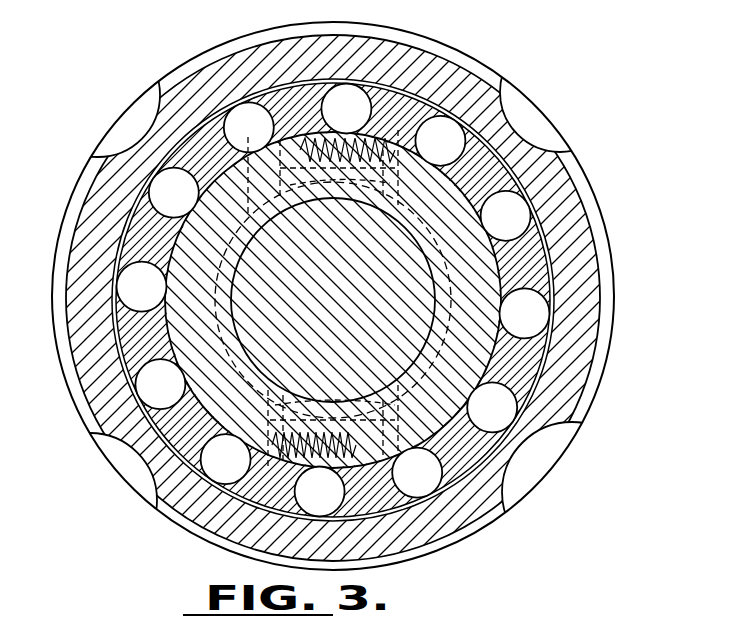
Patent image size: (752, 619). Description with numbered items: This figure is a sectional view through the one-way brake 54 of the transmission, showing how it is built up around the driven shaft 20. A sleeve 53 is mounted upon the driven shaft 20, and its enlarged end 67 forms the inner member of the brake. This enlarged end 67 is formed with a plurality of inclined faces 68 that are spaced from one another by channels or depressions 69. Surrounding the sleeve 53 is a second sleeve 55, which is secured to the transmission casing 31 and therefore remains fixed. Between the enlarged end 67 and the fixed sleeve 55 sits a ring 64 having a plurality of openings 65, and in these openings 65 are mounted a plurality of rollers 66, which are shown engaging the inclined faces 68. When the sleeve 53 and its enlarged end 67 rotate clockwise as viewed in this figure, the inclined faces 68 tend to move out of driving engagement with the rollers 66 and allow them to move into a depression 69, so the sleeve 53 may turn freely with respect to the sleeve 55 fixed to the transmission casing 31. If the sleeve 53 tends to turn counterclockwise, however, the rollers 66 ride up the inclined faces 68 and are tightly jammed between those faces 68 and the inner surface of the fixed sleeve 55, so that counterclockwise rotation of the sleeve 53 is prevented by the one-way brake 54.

The driven shaft 20 is at (362, 319).
The transmission casing 31 is at (580, 423).
The sleeve 53 is at (232, 258).
The one-way brake 54 is at (610, 171).
The sleeve 55 is at (548, 428).
The ring 64 is at (541, 258).
The openings 65 is at (538, 337).
The rollers 66 is at (567, 302).
The enlarged end of sleeve 67 is at (215, 258).
The inclined faces 68 is at (280, 129).
The channels or depressions 69 is at (202, 145).